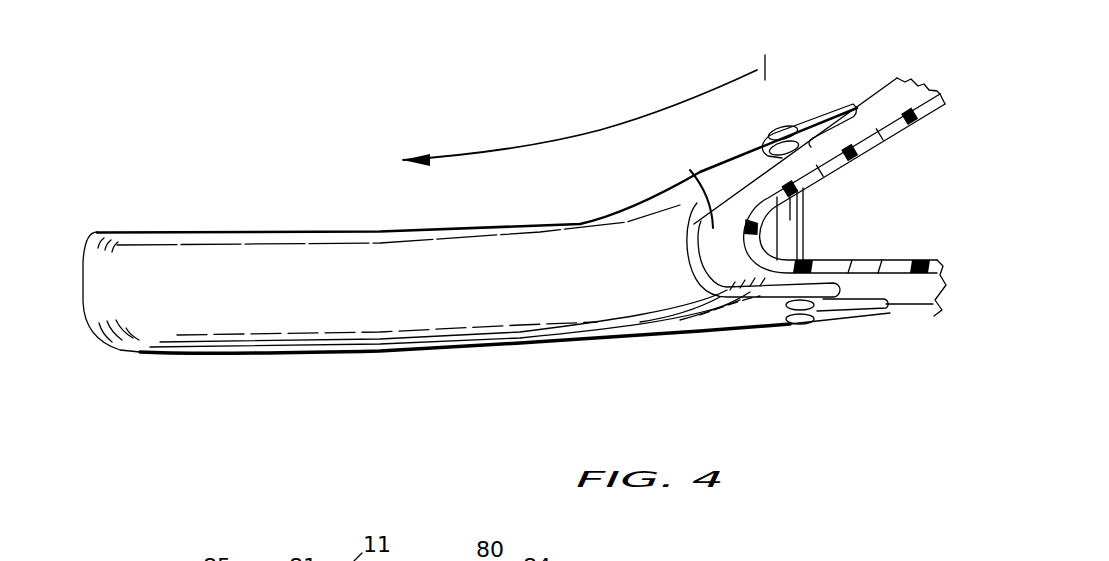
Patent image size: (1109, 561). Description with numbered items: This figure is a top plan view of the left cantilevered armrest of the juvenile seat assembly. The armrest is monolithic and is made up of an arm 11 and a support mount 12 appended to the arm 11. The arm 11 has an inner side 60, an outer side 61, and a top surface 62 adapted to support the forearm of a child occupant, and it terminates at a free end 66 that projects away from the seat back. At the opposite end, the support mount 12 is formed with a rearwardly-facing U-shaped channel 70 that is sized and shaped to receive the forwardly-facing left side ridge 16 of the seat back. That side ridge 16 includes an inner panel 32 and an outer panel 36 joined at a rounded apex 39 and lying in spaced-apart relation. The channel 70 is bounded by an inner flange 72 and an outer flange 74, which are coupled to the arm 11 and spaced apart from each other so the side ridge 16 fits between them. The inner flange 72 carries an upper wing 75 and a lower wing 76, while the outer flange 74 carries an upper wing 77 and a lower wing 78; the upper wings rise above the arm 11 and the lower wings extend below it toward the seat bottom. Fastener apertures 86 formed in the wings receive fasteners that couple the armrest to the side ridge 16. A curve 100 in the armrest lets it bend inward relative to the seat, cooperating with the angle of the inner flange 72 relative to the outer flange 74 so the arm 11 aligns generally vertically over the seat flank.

The arm 11 is at (103, 388).
The support mount 12 is at (663, 240).
The left side ridge 16 is at (847, 138).
The inner panel 32 is at (887, 104).
The outer panel 36 is at (900, 282).
The rounded apex 39 is at (685, 187).
The inner side 60 is at (243, 240).
The outer side 61 is at (313, 351).
The top surface 62 is at (293, 277).
The free end 66 is at (102, 303).
The U-shaped channel 70 is at (700, 267).
The inner flange 72 is at (740, 157).
The outer flange 74 is at (737, 323).
The upper wing 75 is at (807, 120).
The lower wing 76 is at (841, 105).
The upper wing 77 is at (827, 280).
The lower wing 78 is at (870, 314).
The fastener apertures 86 is at (773, 150).
The curve 100 is at (574, 135).